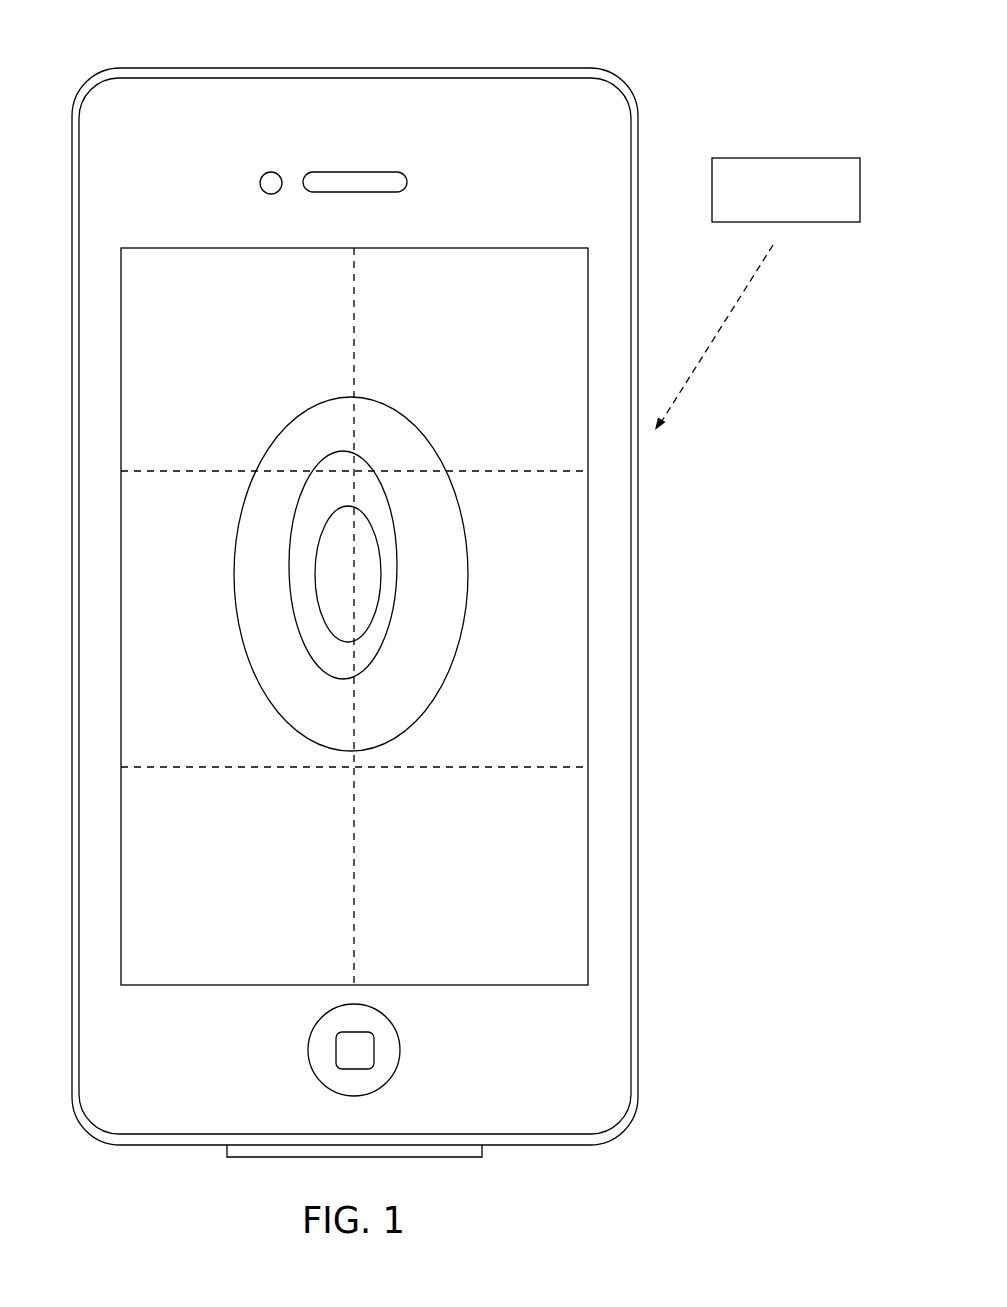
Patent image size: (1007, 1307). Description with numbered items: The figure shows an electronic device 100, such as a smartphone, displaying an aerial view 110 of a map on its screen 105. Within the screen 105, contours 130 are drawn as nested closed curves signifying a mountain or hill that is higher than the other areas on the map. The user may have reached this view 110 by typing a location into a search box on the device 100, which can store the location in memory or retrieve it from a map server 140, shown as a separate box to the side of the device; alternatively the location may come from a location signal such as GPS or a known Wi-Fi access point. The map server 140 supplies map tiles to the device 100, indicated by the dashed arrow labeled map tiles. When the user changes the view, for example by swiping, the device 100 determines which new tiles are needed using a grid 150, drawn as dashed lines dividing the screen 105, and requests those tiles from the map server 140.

The electronic device 100 is at (173, 68).
The screen 105 is at (252, 985).
The aerial view 110 is at (512, 732).
The contours 130 is at (443, 597).
The map server 140 is at (755, 158).
The grid 150 is at (350, 322).